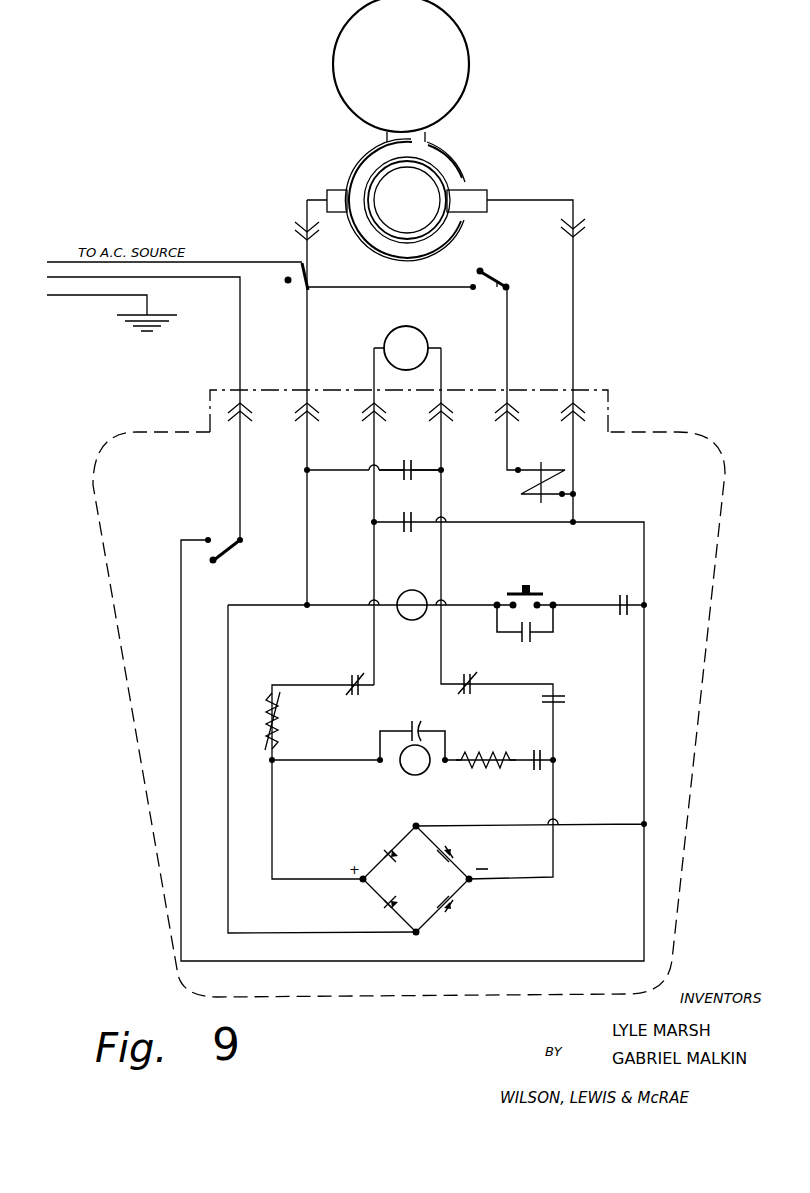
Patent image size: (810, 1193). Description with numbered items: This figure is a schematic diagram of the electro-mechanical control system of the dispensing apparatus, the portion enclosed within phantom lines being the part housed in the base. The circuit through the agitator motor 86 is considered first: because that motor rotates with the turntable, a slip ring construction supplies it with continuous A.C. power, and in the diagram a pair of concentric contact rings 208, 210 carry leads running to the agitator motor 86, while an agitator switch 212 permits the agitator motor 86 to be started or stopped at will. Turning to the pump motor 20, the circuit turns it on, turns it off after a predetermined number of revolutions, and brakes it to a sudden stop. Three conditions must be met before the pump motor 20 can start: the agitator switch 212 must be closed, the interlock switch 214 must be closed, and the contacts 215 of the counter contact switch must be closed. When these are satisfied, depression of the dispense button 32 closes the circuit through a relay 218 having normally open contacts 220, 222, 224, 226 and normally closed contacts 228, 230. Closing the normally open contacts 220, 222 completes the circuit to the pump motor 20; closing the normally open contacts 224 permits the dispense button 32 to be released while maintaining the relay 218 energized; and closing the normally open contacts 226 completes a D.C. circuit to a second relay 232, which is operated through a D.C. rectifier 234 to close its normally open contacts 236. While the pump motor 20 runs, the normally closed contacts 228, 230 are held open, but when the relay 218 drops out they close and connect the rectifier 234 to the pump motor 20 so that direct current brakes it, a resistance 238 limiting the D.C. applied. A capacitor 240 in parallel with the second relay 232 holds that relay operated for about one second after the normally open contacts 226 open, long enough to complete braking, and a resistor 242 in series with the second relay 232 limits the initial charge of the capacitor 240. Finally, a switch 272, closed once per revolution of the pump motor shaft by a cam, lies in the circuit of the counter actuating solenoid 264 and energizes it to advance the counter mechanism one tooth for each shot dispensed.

The agitator motor 86 is at (470, 58).
The contact ring 208 is at (464, 176).
The contact ring 210 is at (368, 206).
The interlock switch 214 is at (309, 280).
The switch 272 is at (510, 268).
The motor 20 is at (427, 341).
The normally open contacts 222 is at (413, 470).
The counter actuating solenoid 264 is at (532, 468).
The normally open contacts 220 is at (406, 526).
The relay 218 is at (409, 620).
The dispense button 32 is at (525, 589).
The normally open contacts 224 is at (533, 636).
The contacts 215 is at (628, 597).
The normally closed contacts 230 is at (470, 687).
The normally open contacts 236 is at (557, 697).
The capacitor 240 is at (412, 732).
The resistor 242 is at (475, 756).
The second relay 232 is at (411, 775).
The normally open contacts 226 is at (530, 772).
The D.C. rectifier 234 is at (434, 921).
The normally closed contacts 228 is at (352, 686).
The resistance 238 is at (287, 721).
The agitator switch 212 is at (227, 553).